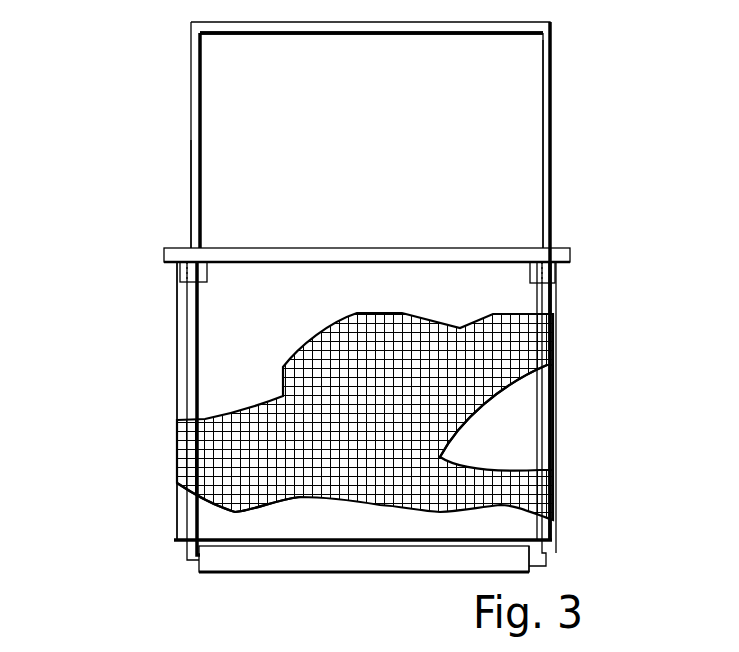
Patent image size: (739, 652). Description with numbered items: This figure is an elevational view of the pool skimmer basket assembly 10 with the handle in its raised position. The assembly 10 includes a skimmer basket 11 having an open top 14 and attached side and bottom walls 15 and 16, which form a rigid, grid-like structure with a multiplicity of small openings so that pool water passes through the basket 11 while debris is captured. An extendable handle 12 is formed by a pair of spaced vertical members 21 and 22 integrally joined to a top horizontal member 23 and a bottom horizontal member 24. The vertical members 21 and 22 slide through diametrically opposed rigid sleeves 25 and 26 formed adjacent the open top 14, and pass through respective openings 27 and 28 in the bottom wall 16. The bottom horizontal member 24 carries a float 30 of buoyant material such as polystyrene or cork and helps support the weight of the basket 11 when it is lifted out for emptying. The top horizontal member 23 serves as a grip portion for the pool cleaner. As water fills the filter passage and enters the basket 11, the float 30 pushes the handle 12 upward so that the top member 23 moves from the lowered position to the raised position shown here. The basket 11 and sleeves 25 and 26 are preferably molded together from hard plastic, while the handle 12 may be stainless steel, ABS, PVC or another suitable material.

The pool skimmer basket assembly 10 is at (155, 398).
The skimmer basket 11 is at (527, 452).
The extendable handle 12 is at (157, 92).
The open top 14 is at (205, 247).
The side wall 15 is at (510, 420).
The bottom wall 16 is at (222, 533).
The vertical member 21 is at (190, 170).
The vertical member 22 is at (548, 70).
The top horizontal member 23 is at (347, 35).
The bottom horizontal member 24 is at (188, 567).
The sleeve 25 is at (183, 270).
The sleeve 26 is at (555, 272).
The opening 27 is at (180, 532).
The opening 28 is at (552, 532).
The float 30 is at (538, 570).